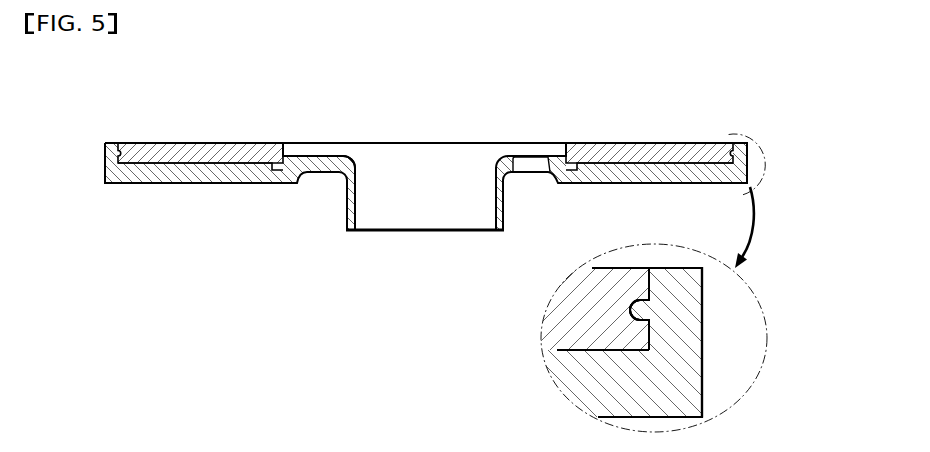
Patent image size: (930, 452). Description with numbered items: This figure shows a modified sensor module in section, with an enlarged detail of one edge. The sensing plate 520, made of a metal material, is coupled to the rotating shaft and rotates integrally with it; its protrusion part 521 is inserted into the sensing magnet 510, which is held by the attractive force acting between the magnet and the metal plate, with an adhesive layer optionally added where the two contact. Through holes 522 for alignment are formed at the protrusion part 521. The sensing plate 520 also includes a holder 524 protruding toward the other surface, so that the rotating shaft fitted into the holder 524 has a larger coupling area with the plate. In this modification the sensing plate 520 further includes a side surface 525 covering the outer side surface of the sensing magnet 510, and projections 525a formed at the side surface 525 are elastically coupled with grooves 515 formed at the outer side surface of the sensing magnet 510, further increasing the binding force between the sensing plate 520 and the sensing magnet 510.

The sensing magnet 510 is at (652, 152).
The grooves 515 is at (630, 310).
The sensing plate 520 is at (597, 383).
The protrusion part 521 is at (323, 153).
The through holes 522 is at (535, 152).
The holder 524 is at (347, 216).
The side surface 525 is at (690, 318).
The projections 525a is at (645, 300).